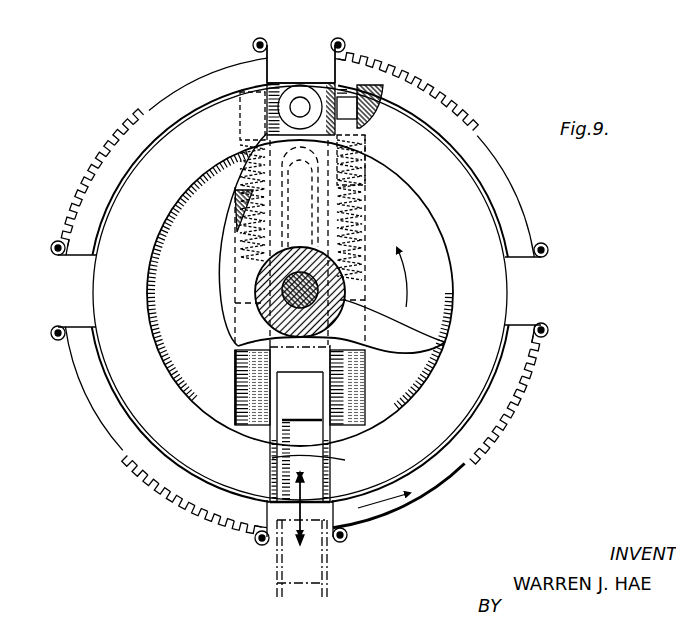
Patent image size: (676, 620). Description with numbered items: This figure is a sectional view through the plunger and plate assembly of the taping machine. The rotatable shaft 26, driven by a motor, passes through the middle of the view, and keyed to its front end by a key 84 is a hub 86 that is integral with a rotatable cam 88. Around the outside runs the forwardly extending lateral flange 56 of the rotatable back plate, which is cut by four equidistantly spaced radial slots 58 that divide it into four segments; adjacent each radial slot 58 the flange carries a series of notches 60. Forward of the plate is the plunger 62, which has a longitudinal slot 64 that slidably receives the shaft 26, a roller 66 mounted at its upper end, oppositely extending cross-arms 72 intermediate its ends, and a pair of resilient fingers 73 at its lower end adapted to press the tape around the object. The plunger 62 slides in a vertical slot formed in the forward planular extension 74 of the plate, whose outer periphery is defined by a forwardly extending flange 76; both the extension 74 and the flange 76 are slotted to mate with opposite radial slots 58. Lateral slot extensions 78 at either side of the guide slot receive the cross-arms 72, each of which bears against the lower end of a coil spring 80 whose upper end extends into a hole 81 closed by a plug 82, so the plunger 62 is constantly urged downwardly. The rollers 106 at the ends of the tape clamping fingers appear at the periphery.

The rotatable shaft 26 is at (345, 312).
The lateral flange 56 is at (485, 150).
The radial slots 58 is at (300, 73).
The notches 60 is at (370, 66).
The plunger 62 is at (260, 372).
The longitudinal slot 64 is at (386, 270).
The roller 66 is at (296, 95).
The cross-arms 72 is at (235, 298).
The resilient fingers 73 is at (318, 462).
The planular extension 74 is at (182, 227).
The flange 76 is at (187, 127).
The lateral slot extensions 78 is at (235, 222).
The coil spring 80 is at (235, 207).
The hole 81 is at (240, 126).
The plug 82 is at (266, 80).
The key 84 is at (296, 262).
The hub 86 is at (238, 346).
The cam 88 is at (452, 286).
The rollers 106 is at (261, 38).